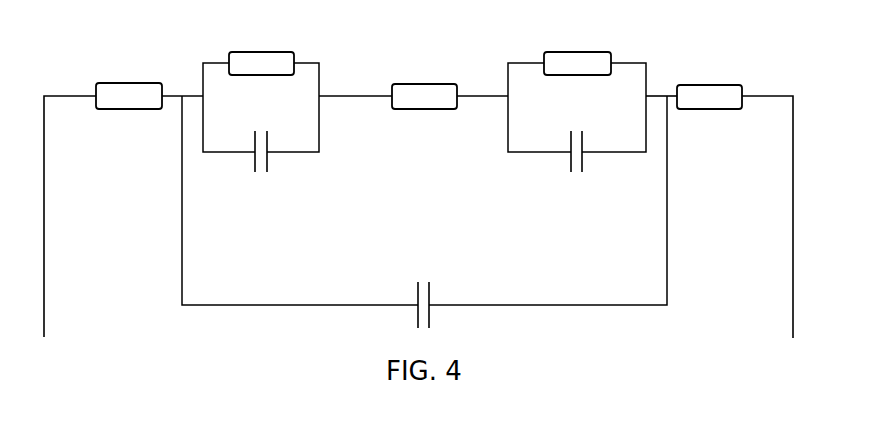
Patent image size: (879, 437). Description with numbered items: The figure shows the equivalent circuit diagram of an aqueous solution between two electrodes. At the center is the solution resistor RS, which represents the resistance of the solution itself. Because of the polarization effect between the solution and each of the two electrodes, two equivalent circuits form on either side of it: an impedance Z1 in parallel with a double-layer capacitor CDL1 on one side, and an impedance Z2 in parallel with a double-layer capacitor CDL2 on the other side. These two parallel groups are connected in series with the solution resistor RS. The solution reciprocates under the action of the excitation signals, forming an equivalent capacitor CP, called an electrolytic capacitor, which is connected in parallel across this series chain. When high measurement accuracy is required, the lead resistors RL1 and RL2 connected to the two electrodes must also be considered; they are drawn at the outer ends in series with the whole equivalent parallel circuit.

The lead resistor RL1 is at (129, 80).
The impedance Z1 is at (261, 58).
The double-layer capacitor CDL1 is at (261, 157).
The solution resistor RS is at (424, 80).
The impedance Z2 is at (577, 59).
The double-layer capacitor CDL2 is at (577, 157).
The lead resistor RL2 is at (709, 82).
The equivalent capacitor CP is at (424, 212).